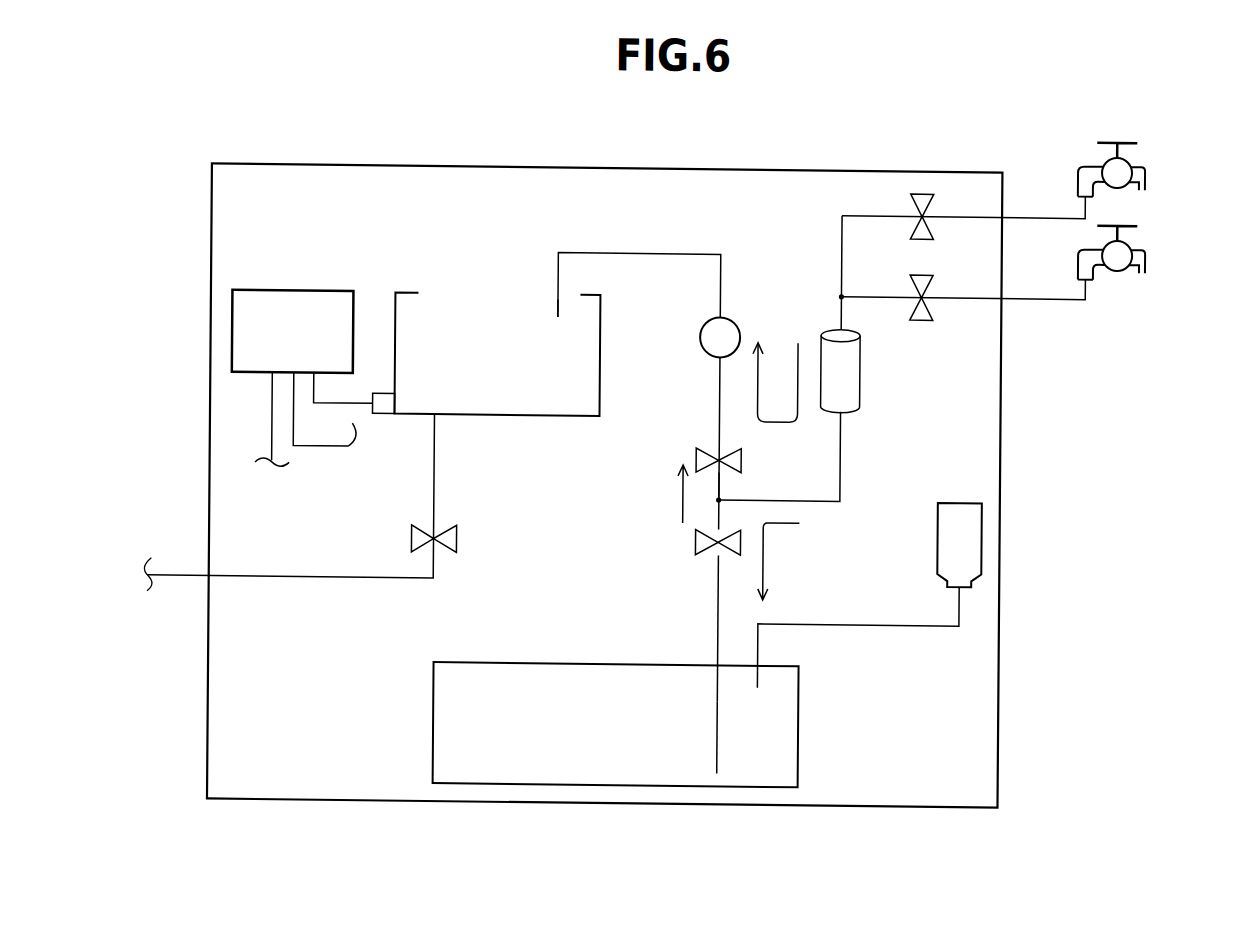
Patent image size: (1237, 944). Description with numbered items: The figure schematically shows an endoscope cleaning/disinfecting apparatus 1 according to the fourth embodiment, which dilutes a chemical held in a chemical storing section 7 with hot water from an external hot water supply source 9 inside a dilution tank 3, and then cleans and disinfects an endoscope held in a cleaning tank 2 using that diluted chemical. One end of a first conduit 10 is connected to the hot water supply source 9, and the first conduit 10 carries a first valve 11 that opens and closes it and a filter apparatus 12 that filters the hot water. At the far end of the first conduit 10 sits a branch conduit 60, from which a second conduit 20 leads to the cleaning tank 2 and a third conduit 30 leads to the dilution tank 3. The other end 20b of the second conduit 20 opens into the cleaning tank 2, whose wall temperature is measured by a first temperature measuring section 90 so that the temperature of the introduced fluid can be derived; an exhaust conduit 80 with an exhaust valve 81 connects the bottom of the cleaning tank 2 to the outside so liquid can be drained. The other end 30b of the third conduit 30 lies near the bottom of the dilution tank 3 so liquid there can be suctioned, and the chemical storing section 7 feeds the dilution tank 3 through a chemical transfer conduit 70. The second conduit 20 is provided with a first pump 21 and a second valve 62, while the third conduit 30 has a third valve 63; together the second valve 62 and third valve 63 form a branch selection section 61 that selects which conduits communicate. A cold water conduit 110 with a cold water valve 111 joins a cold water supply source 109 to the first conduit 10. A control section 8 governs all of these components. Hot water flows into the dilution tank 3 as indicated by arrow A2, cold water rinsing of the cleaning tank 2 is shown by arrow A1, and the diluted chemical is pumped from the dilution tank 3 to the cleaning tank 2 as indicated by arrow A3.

The endoscope cleaning/disinfecting apparatus 1 is at (256, 168).
The cleaning tank 2 is at (410, 295).
The dilution tank 3 is at (603, 786).
The chemical storing section 7 is at (983, 541).
The control section 8 is at (231, 331).
The hot water supply source 9 is at (1132, 152).
The first conduit 10 is at (840, 457).
The first valve 11 is at (910, 190).
The filter apparatus 12 is at (859, 349).
The second conduit 20 is at (630, 307).
The other end of the second conduit 20b is at (557, 318).
The first pump 21 is at (704, 321).
The third conduit 30 is at (668, 663).
The other end of the third conduit 30b is at (717, 757).
The branch conduit 60 is at (720, 497).
The branch selection section 61 is at (632, 533).
The second valve 62 is at (696, 455).
The third valve 63 is at (696, 540).
The chemical transfer conduit 70 is at (919, 622).
The exhaust conduit 80 is at (328, 580).
The exhaust valve 81 is at (412, 536).
The first temperature measuring section 90 is at (380, 396).
The cold water supply source 109 is at (1133, 242).
The cold water conduit 110 is at (964, 295).
The cold water valve 111 is at (910, 271).
The arrow A1 is at (760, 373).
The arrow A2 is at (764, 563).
The arrow A3 is at (683, 497).